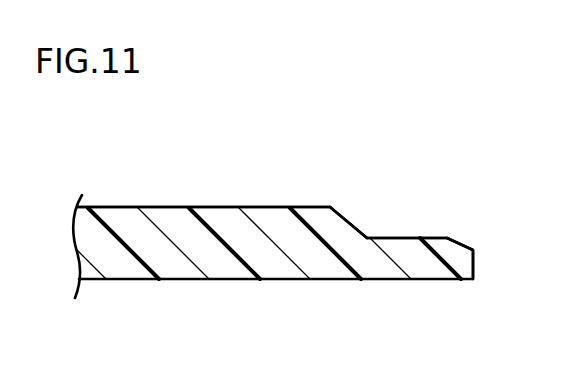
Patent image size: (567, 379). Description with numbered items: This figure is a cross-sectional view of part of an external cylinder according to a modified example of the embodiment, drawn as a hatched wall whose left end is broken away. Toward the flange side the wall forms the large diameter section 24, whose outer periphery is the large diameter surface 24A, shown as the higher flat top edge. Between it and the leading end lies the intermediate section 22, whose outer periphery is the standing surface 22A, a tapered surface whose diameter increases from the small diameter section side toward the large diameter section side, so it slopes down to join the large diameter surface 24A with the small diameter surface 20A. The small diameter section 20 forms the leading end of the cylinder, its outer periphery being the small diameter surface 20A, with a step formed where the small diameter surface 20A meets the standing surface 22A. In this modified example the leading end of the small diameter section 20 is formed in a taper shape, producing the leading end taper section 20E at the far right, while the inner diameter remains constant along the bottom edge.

The small diameter section 20 is at (418, 281).
The small diameter surface 20A is at (403, 237).
The leading end taper section 20E is at (465, 239).
The intermediate section 22 is at (342, 281).
The standing surface 22A is at (347, 221).
The large diameter section 24 is at (165, 281).
The large diameter surface 24A is at (168, 206).